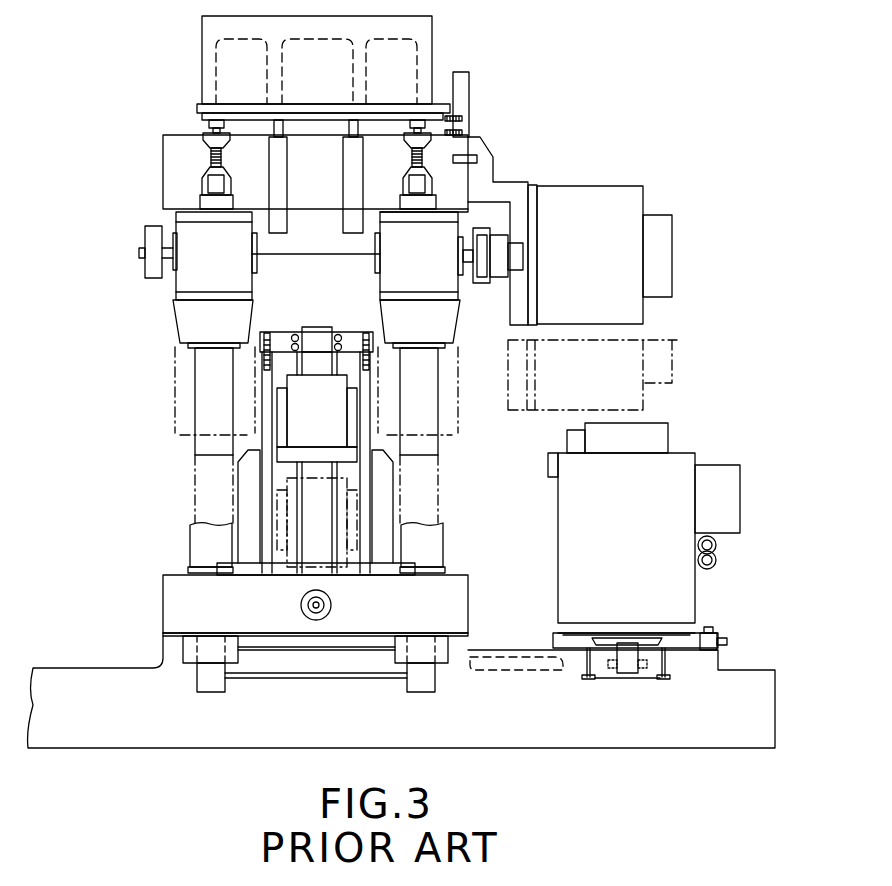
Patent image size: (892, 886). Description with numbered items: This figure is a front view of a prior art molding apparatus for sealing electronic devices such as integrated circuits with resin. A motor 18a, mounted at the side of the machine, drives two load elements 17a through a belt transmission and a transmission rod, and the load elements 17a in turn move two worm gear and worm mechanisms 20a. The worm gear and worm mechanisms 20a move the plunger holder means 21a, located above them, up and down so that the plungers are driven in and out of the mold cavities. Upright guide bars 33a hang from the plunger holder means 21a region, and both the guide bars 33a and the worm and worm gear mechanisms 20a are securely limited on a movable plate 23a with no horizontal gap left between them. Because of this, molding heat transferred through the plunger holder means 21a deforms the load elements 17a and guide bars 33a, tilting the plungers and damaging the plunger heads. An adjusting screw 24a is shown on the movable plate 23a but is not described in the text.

The load element 17a is at (420, 205).
The motor 18a is at (610, 258).
The worm gear and worm mechanism 20a is at (208, 312).
The plunger holder means 21a is at (252, 122).
The movable plate 23a is at (170, 193).
The adjusting screw 24a is at (210, 160).
The guide bar 33a is at (355, 157).